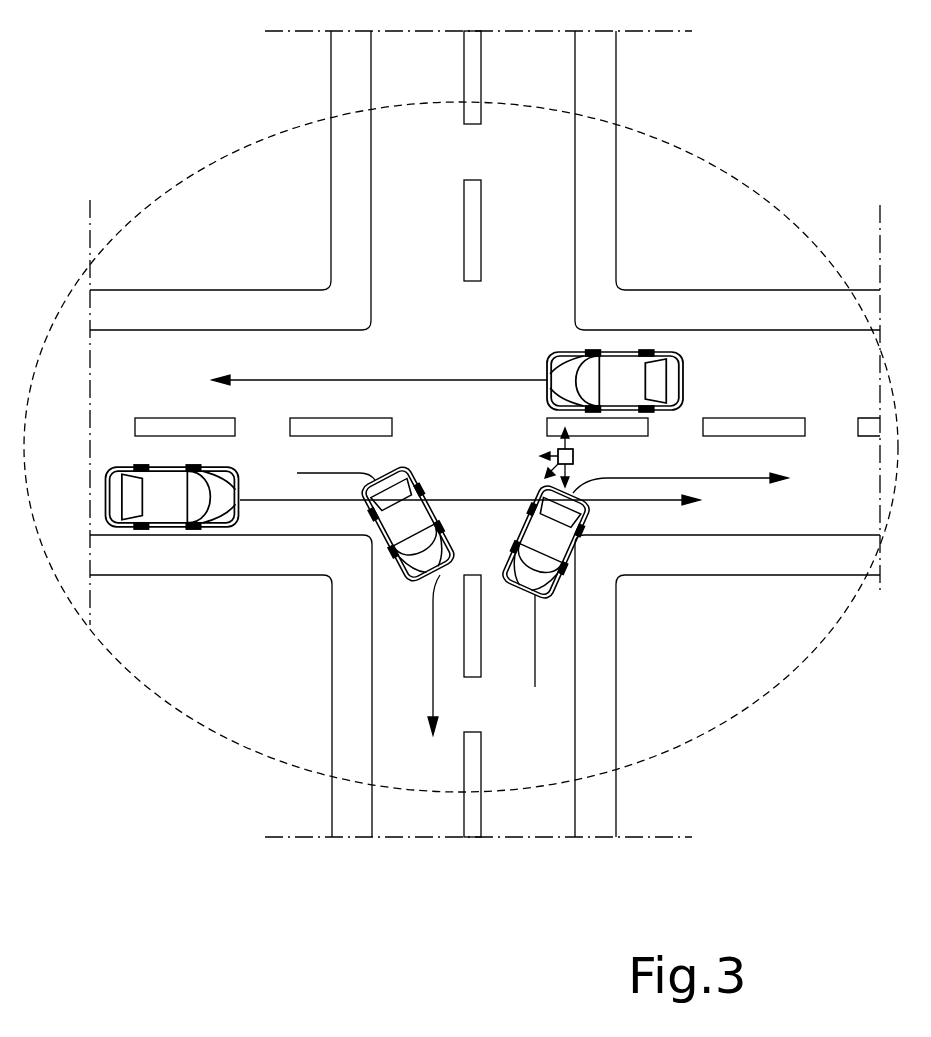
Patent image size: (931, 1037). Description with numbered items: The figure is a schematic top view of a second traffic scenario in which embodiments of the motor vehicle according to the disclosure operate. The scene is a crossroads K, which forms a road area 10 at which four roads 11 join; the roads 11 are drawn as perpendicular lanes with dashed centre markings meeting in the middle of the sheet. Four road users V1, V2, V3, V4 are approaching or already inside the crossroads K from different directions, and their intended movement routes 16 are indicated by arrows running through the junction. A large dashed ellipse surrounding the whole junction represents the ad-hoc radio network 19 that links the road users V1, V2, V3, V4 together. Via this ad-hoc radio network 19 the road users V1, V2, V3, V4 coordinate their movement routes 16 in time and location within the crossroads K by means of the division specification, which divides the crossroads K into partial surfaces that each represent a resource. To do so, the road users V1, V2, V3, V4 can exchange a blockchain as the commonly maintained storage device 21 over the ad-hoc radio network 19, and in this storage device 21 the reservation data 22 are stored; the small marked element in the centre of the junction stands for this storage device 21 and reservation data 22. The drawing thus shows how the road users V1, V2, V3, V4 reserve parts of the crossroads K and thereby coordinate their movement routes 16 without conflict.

The ad-hoc radio network 19 is at (221, 162).
The road area 10 is at (616, 172).
The roads 11 is at (188, 355).
The crossroads K is at (326, 284).
The movement routes 16 is at (470, 381).
The commonly maintained storage device 21 is at (574, 457).
The reservation data 22 is at (574, 457).
The road user V1 is at (380, 540).
The road user V2 is at (577, 542).
The road user V3 is at (642, 352).
The road user V4 is at (108, 498).